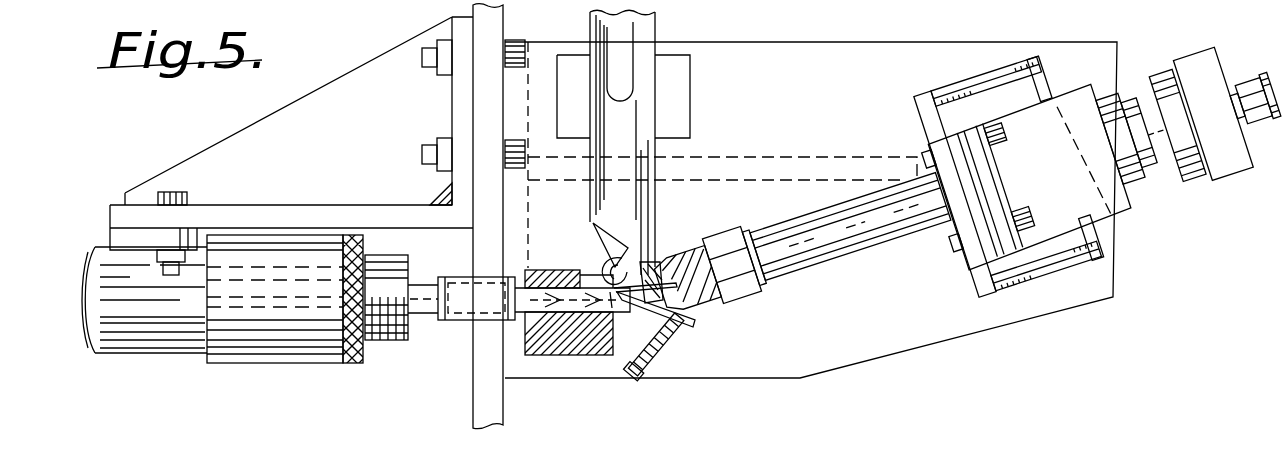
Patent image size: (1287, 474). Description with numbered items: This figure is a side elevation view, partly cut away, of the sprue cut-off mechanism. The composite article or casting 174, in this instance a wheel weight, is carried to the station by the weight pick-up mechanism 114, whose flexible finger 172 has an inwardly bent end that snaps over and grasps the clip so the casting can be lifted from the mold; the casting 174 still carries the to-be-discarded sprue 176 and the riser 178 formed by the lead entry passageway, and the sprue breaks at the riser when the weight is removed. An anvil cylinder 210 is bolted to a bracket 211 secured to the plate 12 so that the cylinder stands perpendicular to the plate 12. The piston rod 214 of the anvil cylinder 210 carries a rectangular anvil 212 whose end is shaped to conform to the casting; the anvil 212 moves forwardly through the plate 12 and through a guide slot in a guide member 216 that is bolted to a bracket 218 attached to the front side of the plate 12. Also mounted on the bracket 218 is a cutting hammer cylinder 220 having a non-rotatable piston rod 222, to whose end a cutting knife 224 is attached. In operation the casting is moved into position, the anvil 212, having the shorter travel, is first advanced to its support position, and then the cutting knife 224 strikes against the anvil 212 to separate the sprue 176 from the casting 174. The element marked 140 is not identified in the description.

The plate 12 is at (483, 396).
The weight pick-up mechanism 114 is at (640, 150).
The hook 140 is at (607, 264).
The flexible finger 172 is at (597, 242).
The composite article 174 is at (642, 255).
The sprue 176 is at (693, 323).
The riser 178 is at (663, 343).
The anvil cylinder 210 is at (283, 342).
The bracket 211 is at (378, 217).
The anvil 212 is at (565, 312).
The piston rod 214 is at (422, 305).
The guide member 216 is at (540, 352).
The bracket 218 is at (783, 78).
The cutting hammer cylinder 220 is at (1177, 170).
The piston rod 222 is at (857, 233).
The cutting knife 224 is at (658, 268).